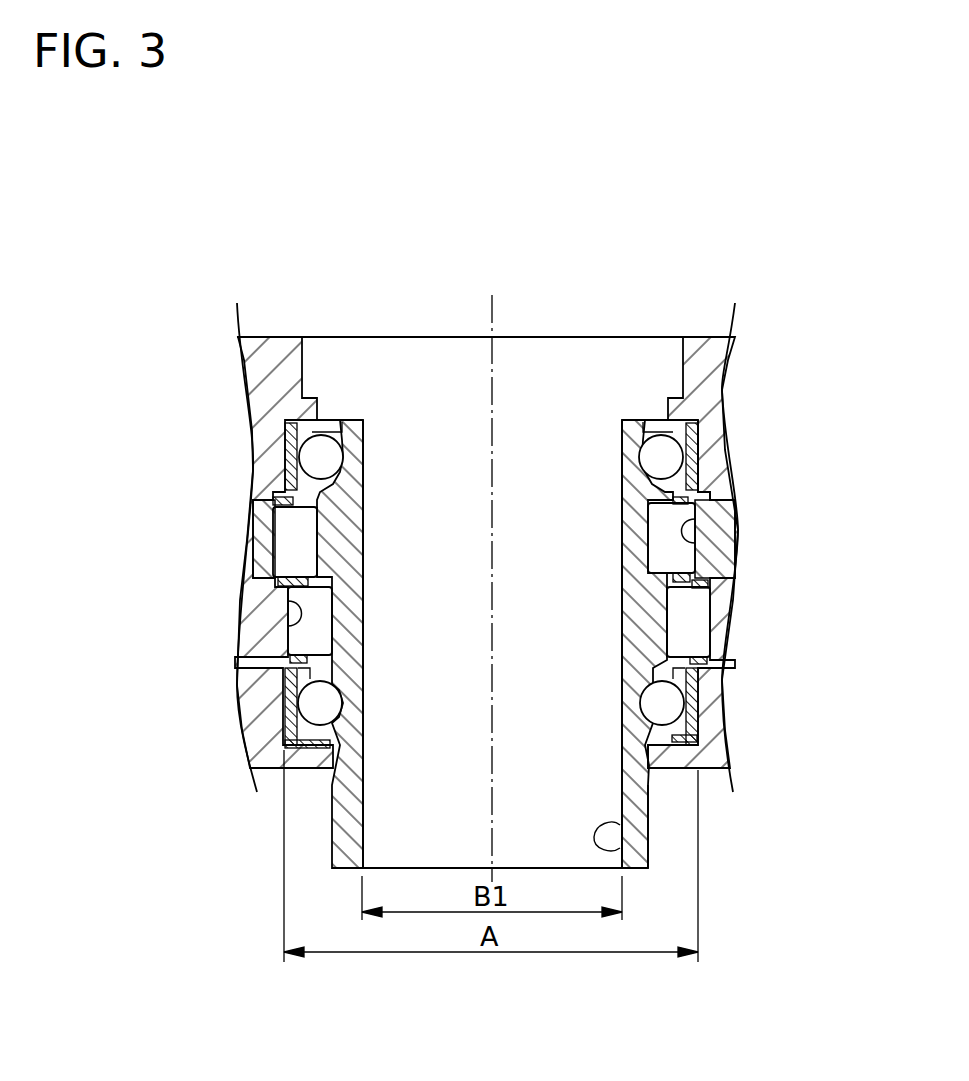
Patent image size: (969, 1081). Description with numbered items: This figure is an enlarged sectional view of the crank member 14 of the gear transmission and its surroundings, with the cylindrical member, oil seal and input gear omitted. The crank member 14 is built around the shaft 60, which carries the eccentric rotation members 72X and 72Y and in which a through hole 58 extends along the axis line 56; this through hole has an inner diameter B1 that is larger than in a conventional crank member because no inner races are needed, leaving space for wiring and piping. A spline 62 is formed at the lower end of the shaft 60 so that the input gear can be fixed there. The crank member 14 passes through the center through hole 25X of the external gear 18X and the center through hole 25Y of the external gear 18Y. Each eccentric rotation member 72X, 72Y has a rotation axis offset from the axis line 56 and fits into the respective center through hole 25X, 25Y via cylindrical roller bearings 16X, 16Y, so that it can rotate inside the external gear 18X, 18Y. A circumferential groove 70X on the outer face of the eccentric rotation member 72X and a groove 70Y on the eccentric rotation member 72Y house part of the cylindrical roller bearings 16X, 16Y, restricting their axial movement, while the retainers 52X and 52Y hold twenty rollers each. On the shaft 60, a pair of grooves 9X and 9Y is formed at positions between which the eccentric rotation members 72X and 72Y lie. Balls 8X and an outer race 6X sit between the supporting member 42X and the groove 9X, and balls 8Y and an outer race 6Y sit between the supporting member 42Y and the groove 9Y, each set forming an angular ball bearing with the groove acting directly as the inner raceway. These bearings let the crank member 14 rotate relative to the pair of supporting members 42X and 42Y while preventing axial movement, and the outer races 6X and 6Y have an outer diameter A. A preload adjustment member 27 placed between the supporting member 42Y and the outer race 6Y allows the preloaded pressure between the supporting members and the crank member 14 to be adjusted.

The crank member 14 is at (573, 311).
The axis line 56 is at (493, 573).
The through hole 58 is at (648, 858).
The shaft 60 is at (620, 825).
The spline 62 is at (632, 800).
The outer race 6X is at (697, 470).
The balls 8X is at (675, 450).
The groove 9X is at (697, 426).
The supporting member 42X is at (698, 478).
The retainer 52X is at (283, 496).
The cylindrical roller bearings 16X is at (295, 525).
The groove 70X is at (340, 552).
The eccentric rotation member 72X is at (300, 582).
The external gear 18Y is at (282, 630).
The center through hole 25Y is at (306, 612).
The external gear 18X is at (675, 517).
The center through hole 25X is at (690, 553).
The eccentric rotation member 72Y is at (690, 578).
The retainer 52Y is at (704, 584).
The cylindrical roller bearings 16Y is at (690, 603).
The groove 70Y is at (642, 648).
The outer race 6Y is at (694, 737).
The balls 8Y is at (668, 710).
The groove 9Y is at (674, 699).
The preload adjustment member 27 is at (288, 743).
The supporting member 42Y is at (708, 753).